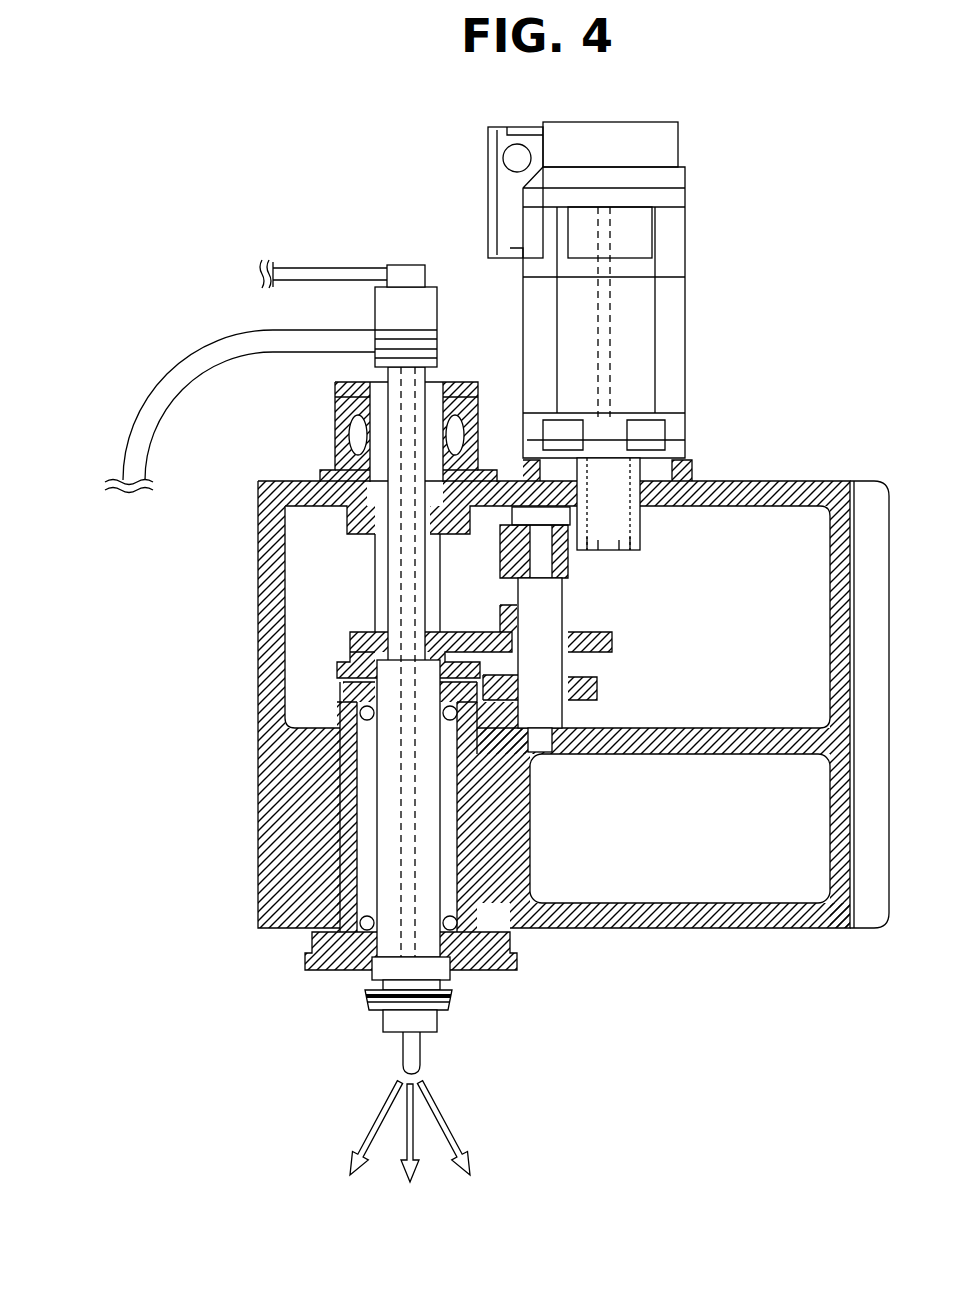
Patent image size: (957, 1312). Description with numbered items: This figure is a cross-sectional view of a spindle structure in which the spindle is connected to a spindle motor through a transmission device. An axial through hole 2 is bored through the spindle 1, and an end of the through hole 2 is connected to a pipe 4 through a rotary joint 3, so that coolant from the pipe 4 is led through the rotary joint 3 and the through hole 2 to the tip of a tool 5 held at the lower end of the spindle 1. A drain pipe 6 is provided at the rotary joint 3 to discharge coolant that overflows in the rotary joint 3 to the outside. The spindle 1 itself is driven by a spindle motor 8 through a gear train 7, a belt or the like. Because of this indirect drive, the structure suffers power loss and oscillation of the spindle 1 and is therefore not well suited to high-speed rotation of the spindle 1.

The spindle 1 is at (360, 578).
The axial through hole 2 is at (425, 852).
The rotary joint 3 is at (437, 265).
The pipe 4 is at (320, 262).
The tool 5 is at (436, 1049).
The drain pipe 6 is at (188, 347).
The gear train 7 is at (628, 631).
The spindle motor 8 is at (705, 270).